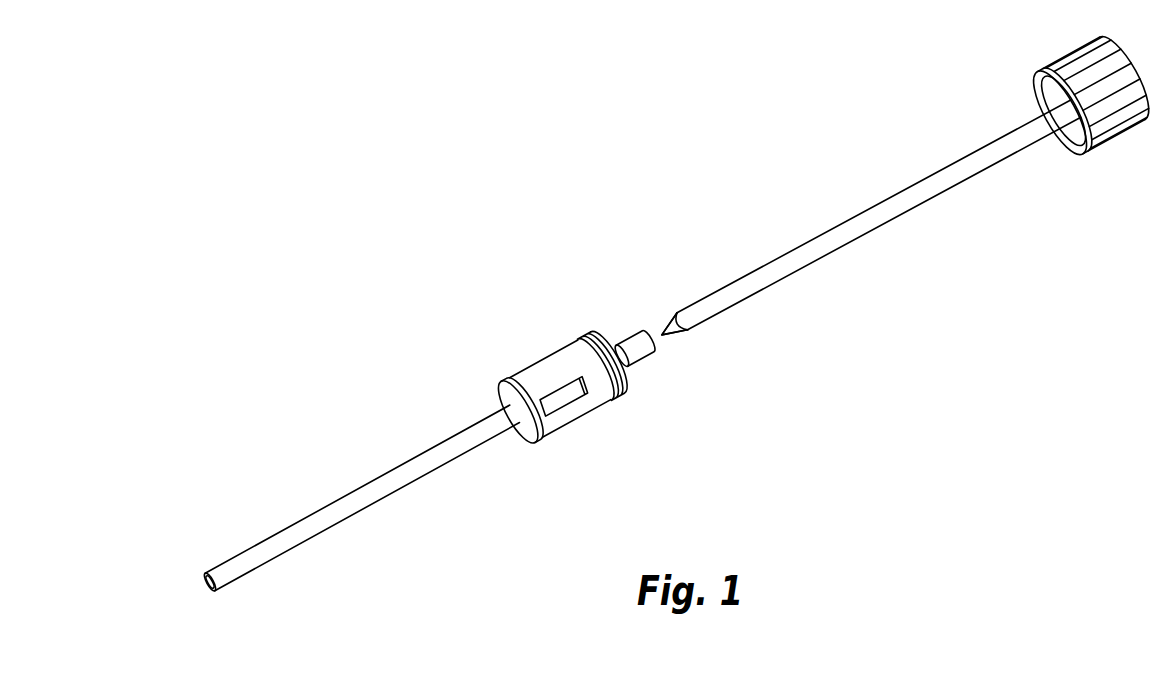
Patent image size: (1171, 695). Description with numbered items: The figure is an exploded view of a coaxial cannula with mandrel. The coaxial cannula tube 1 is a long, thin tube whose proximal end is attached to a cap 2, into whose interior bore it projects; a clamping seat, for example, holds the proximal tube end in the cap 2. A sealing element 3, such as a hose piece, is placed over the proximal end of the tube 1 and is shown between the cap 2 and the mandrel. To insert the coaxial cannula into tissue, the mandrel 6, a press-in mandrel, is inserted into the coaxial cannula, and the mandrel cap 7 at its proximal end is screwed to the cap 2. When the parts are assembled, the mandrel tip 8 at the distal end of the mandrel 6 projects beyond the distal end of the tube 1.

The coaxial cannula tube 1 is at (417, 470).
The cap 2 is at (552, 367).
The sealing element 3 is at (640, 352).
The mandrel 6 is at (987, 170).
The mandrel cap 7 is at (1112, 132).
The mandrel tip 8 is at (677, 335).